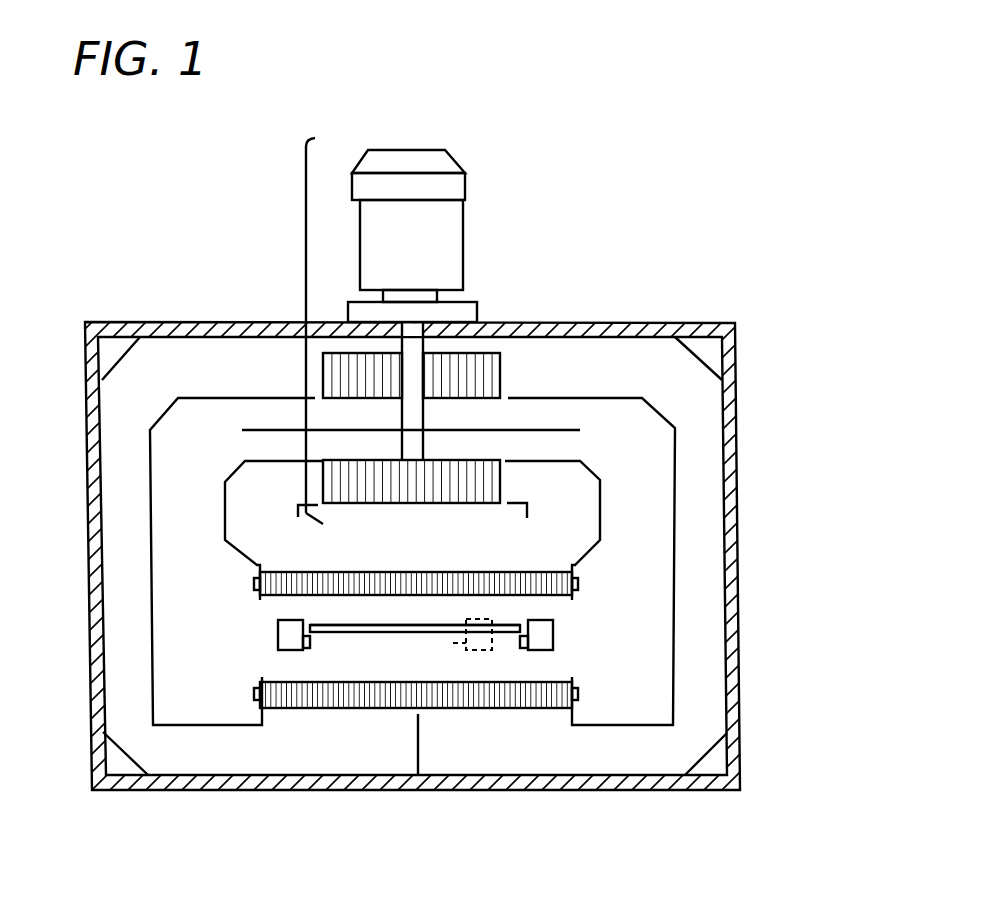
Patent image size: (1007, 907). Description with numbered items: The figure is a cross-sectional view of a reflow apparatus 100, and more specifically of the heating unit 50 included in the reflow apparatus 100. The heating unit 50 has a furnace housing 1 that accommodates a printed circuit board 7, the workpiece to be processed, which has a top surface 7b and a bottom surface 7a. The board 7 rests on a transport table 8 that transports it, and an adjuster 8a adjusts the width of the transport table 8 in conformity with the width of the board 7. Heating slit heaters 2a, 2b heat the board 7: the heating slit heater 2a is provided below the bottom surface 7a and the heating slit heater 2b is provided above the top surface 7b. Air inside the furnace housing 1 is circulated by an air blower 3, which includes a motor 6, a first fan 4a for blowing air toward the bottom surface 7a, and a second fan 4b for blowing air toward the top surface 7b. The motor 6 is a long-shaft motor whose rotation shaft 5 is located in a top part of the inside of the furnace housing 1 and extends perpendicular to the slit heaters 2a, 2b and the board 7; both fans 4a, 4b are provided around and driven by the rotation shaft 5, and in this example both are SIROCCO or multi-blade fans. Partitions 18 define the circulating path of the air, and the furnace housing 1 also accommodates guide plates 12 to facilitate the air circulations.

The furnace housing 1 is at (650, 323).
The heating slit heater 2a is at (533, 705).
The heating slit heater 2b is at (572, 597).
The air blower 3 is at (305, 277).
The first fan 4a is at (500, 357).
The second fan 4b is at (457, 492).
The rotation shaft 5 is at (412, 347).
The motor 6 is at (442, 238).
The printed circuit board 7 is at (338, 633).
The bottom surface 7a is at (377, 633).
The top surface 7b is at (383, 622).
The transport table 8 is at (542, 645).
The adjuster 8a is at (475, 648).
The guide plate 12 is at (735, 323).
The partition 18 is at (675, 470).
The heating unit 50 is at (814, 219).
The reflow apparatus 100 is at (689, 78).